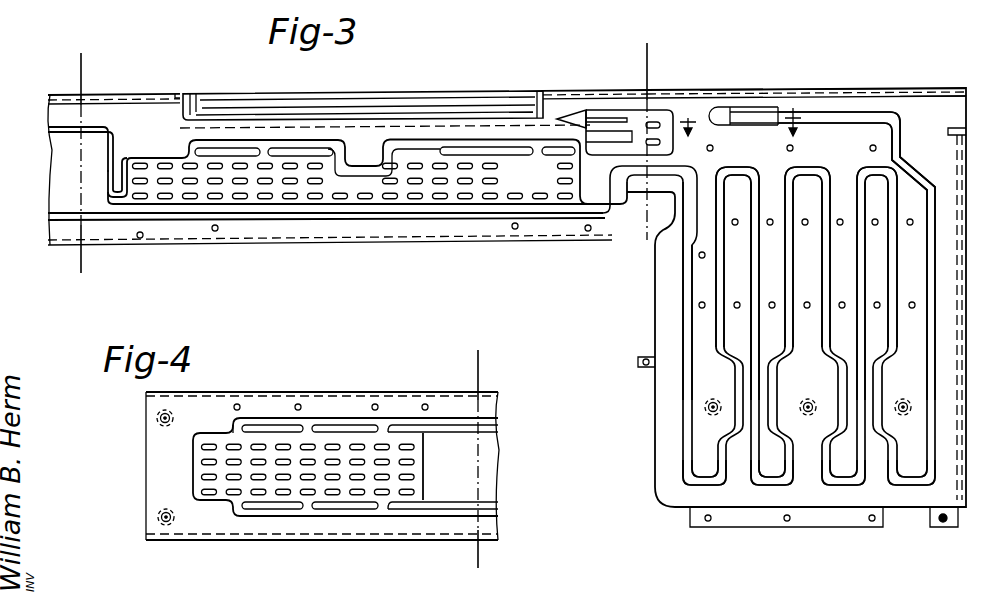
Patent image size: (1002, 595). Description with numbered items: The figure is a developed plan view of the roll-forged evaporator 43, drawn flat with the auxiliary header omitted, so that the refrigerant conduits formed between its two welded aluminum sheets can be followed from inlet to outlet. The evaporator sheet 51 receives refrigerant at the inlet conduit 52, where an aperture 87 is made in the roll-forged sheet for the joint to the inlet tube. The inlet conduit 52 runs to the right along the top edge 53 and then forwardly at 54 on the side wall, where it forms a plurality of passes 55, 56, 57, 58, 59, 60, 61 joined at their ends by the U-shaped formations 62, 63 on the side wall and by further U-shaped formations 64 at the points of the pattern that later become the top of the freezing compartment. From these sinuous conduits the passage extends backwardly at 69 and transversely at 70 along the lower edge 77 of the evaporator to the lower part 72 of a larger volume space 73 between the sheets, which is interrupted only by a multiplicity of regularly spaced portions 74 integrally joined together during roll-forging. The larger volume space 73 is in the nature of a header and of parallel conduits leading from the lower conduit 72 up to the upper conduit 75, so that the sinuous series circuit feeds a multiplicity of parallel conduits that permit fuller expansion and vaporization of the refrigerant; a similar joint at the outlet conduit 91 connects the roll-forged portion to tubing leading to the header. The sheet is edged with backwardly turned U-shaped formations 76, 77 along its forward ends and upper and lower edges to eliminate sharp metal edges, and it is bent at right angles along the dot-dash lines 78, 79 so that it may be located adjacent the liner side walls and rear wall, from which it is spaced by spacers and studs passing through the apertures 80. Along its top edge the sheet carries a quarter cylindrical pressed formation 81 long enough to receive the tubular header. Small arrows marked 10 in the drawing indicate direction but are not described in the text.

In FIG. 3, the flow direction arrows 10 is at (748, 121).
In FIG. 3, the evaporator 43 is at (942, 118).
In FIG. 3, the evaporator sheet 51 is at (936, 95).
In FIG. 3, the inlet conduit 52 is at (866, 119).
In FIG. 3, the top edge 53 is at (798, 92).
In FIG. 3, the forward conduit portion 54 is at (928, 243).
In FIG. 3, the pass 55 is at (893, 248).
In FIG. 3, the pass 56 is at (860, 268).
In FIG. 3, the pass 57 is at (825, 272).
In FIG. 3, the pass 58 is at (791, 268).
In FIG. 3, the pass 59 is at (757, 268).
In FIG. 3, the pass 60 is at (720, 276).
In FIG. 3, the pass 61 is at (686, 283).
In FIG. 3, the U-shaped formation 62 is at (874, 170).
In FIG. 3, the U-shaped formation 63 is at (735, 170).
In FIG. 3, the U-shaped formation 64 is at (700, 490).
In FIG. 3, the backwardly extending conduit 69 is at (669, 170).
In FIG. 3, the transverse conduit 70 is at (393, 216).
In FIG. 4, the transverse conduit 70 is at (497, 512).
In FIG. 3, the lower part of larger volume space 72 is at (338, 205).
In FIG. 4, the lower part of larger volume space 72 is at (323, 516).
In FIG. 3, the larger volume space 73 is at (574, 170).
In FIG. 4, the larger volume space 73 is at (316, 446).
In FIG. 3, the regularly spaced joined portions 74 is at (188, 163).
In FIG. 4, the regularly spaced joined portions 74 is at (410, 460).
In FIG. 3, the upper conduit 75 is at (105, 125).
In FIG. 4, the upper conduit 75 is at (342, 418).
In FIG. 3, the backwardly turned U-shaped edge formation 76 is at (156, 95).
In FIG. 4, the backwardly turned U-shaped edge formation 76 is at (426, 392).
In FIG. 3, the lower edge formation 77 is at (220, 240).
In FIG. 4, the lower edge formation 77 is at (437, 540).
In FIG. 3, the dot-dash bend line 78 is at (83, 72).
In FIG. 4, the dot-dash bend line 78 is at (480, 376).
In FIG. 3, the dot-dash bend line 79 is at (649, 72).
In FIG. 3, the aperture 80 is at (143, 238).
In FIG. 4, the aperture 80 is at (158, 518).
In FIG. 3, the quarter cylindrical pressed formation 81 is at (443, 96).
In FIG. 3, the inlet aperture 87 is at (712, 116).
In FIG. 3, the outlet conduit 91 is at (640, 108).